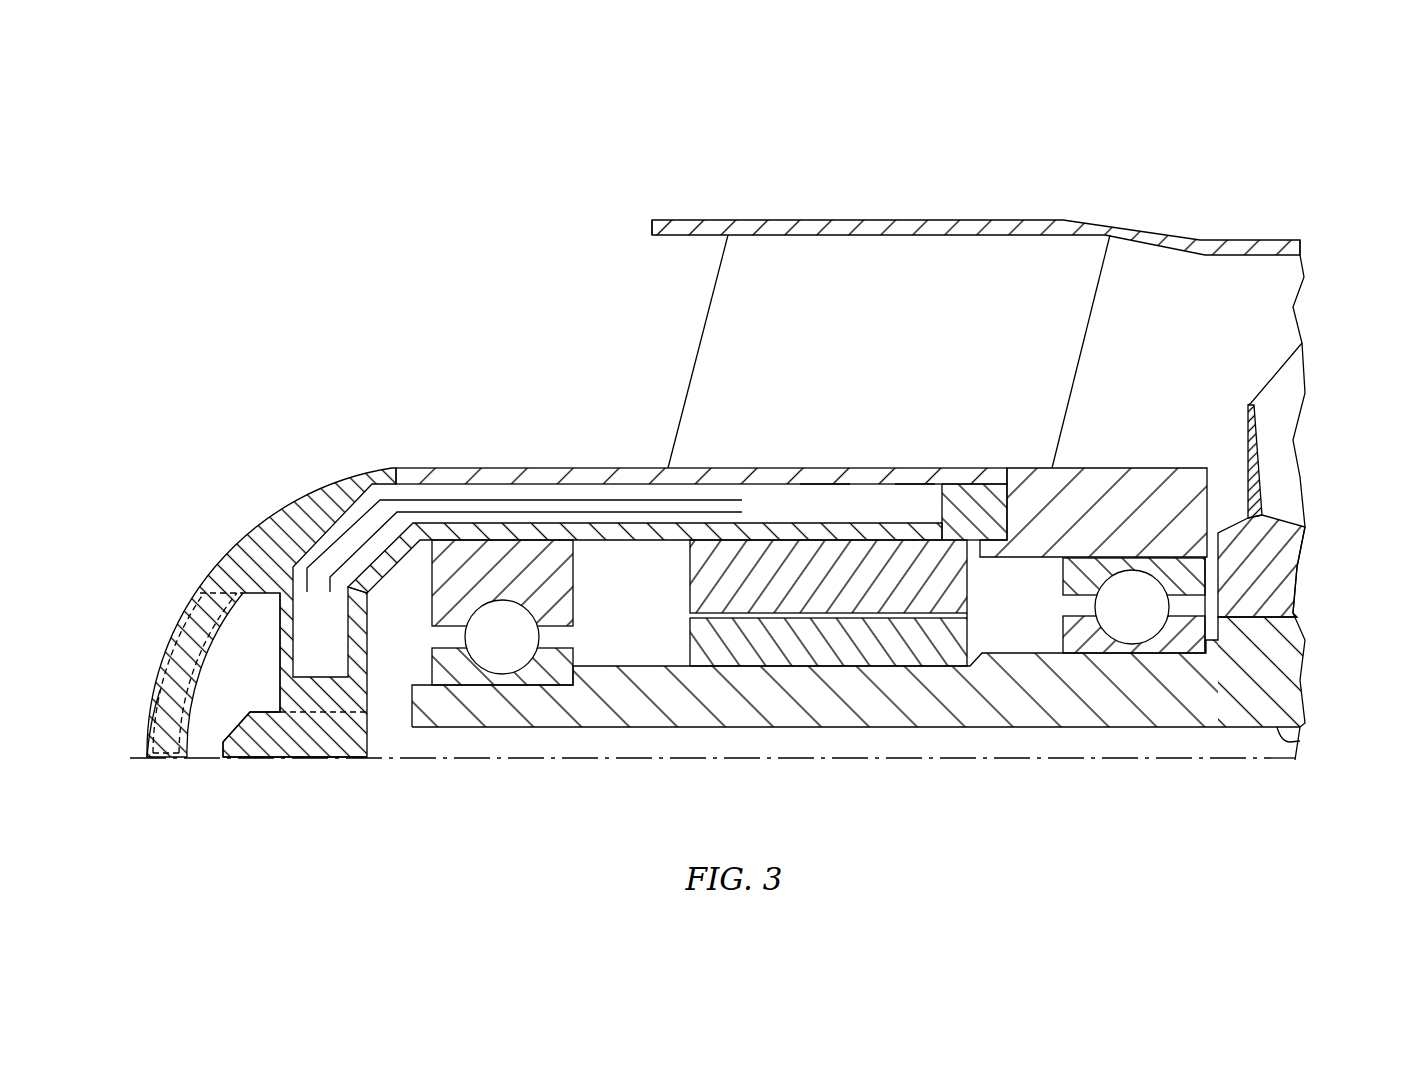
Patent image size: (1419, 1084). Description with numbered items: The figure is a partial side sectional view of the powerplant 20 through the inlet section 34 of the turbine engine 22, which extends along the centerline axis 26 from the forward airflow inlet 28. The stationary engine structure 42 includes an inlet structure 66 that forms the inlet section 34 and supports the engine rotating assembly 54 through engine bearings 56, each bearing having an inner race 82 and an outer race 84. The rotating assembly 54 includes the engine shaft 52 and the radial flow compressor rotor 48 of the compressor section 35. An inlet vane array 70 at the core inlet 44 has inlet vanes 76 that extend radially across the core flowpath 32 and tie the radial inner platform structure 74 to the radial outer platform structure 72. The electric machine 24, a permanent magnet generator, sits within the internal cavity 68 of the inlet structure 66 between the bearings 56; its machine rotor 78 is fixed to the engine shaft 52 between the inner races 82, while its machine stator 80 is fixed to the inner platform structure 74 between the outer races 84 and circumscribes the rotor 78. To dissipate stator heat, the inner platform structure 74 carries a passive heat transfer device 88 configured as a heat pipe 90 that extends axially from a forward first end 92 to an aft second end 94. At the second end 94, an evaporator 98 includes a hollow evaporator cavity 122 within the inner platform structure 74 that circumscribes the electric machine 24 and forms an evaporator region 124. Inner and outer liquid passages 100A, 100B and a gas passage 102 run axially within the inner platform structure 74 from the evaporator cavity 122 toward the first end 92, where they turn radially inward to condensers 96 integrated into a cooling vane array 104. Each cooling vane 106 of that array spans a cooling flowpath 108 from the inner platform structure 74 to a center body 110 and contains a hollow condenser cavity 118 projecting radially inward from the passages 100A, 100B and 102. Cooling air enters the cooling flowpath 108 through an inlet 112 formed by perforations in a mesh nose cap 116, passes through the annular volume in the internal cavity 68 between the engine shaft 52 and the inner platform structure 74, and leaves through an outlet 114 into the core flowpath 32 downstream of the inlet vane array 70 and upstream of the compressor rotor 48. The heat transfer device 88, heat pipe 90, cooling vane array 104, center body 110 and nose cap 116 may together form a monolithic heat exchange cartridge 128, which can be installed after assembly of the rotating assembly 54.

The gas turbine engine 20 is at (270, 203).
The turbine engine 22 is at (318, 238).
The electric machine 24 is at (797, 673).
The axis 26 is at (130, 765).
The airflow inlet 28 is at (912, 246).
The core flowpath 32 is at (1191, 371).
The inlet section 34 is at (912, 188).
The compressor section 35 is at (1312, 292).
The engine structure 42 is at (1265, 225).
The core inlet 44 is at (640, 268).
The compressor rotor 48 is at (1300, 552).
The engine shaft 52 is at (1290, 745).
The engine rotating assembly 54 is at (1305, 687).
The engine bearings 56 is at (578, 619).
The inlet structure 66 is at (880, 200).
The internal cavity 68 is at (680, 589).
The inlet vane array 70 is at (675, 355).
The radial outer platform structure 72 is at (703, 218).
The radial inner platform structure 74 is at (518, 462).
The inlet vanes 76 is at (1097, 305).
The electric machine rotor 78 is at (850, 653).
The electric machine stator 80 is at (810, 593).
The inner races 82 is at (578, 658).
The outer races 84 is at (578, 573).
The heat transfer device 88 is at (837, 438).
The heat pipe 90 is at (822, 478).
The first end 92 is at (280, 650).
The second end 94 is at (1012, 503).
The condensers 96 is at (282, 615).
The evaporator 98 is at (936, 438).
The inner liquid passage 100A is at (430, 516).
The outer liquid passage 100B is at (384, 468).
The gas passage 102 is at (355, 540).
The cooling vane array 104 is at (275, 682).
The cooling vanes 106 is at (270, 697).
The cooling flowpath 108 is at (382, 649).
The center body 110 is at (315, 765).
The cooling flowpath inlet 112 is at (160, 672).
The cooling flowpath outlet 114 is at (1230, 478).
The nose cap 116 is at (145, 727).
The condenser cavity 118 is at (302, 649).
The evaporator cavity 122 is at (808, 516).
The evaporator region 124 is at (913, 478).
The heat exchange cartridge 128 is at (245, 520).